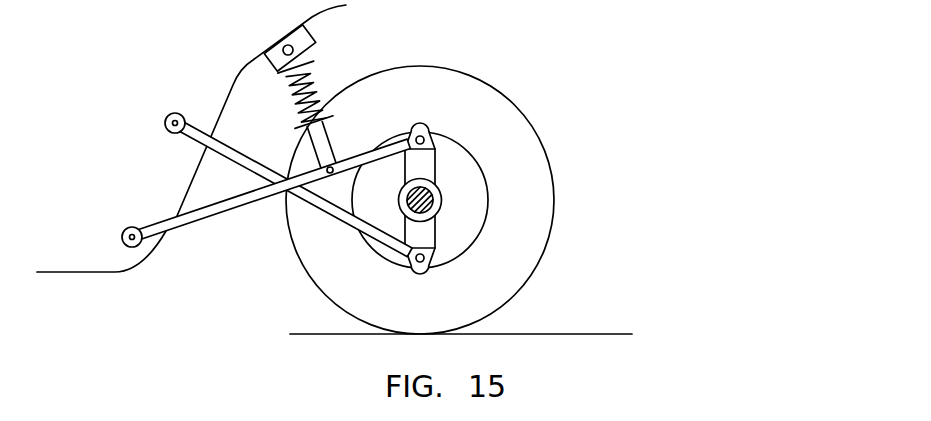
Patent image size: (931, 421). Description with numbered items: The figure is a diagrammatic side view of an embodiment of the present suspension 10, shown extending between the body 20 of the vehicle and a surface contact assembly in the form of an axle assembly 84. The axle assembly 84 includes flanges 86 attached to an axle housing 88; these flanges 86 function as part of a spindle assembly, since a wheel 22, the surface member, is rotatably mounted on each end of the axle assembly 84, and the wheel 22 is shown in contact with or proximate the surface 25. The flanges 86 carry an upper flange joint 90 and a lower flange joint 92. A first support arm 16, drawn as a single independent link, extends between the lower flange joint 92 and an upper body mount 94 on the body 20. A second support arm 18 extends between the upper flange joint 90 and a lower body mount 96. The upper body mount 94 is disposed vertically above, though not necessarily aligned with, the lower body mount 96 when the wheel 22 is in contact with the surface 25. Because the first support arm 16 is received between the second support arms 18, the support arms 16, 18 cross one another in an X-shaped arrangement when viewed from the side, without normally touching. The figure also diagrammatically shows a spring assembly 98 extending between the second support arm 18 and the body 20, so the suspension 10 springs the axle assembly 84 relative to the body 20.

The suspension 10 is at (166, 297).
The first support arm 16 is at (241, 156).
The second support arm 18 is at (216, 214).
The body 20 is at (93, 273).
The wheel 22 is at (300, 272).
The surface 25 is at (611, 334).
The axle assembly 84 is at (562, 112).
The flange 86 is at (430, 235).
The axle housing 88 is at (443, 197).
The upper flange joint 90 is at (432, 132).
The lower flange joint 92 is at (403, 268).
The upper body mount 94 is at (174, 113).
The lower body mount 96 is at (125, 227).
The spring assembly 98 is at (310, 65).